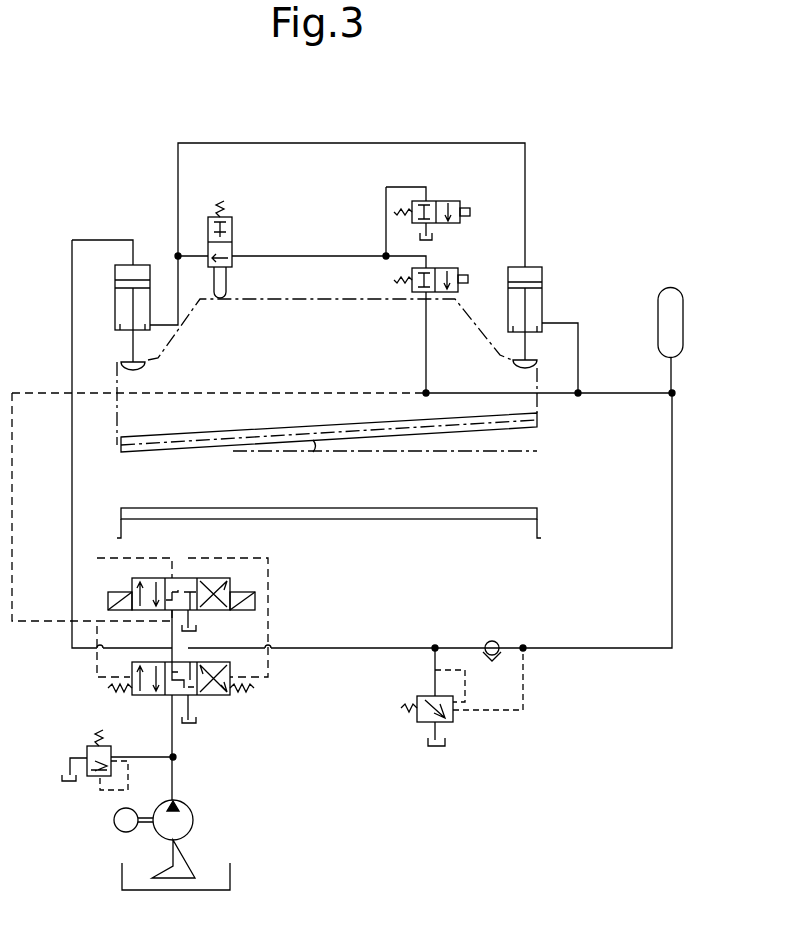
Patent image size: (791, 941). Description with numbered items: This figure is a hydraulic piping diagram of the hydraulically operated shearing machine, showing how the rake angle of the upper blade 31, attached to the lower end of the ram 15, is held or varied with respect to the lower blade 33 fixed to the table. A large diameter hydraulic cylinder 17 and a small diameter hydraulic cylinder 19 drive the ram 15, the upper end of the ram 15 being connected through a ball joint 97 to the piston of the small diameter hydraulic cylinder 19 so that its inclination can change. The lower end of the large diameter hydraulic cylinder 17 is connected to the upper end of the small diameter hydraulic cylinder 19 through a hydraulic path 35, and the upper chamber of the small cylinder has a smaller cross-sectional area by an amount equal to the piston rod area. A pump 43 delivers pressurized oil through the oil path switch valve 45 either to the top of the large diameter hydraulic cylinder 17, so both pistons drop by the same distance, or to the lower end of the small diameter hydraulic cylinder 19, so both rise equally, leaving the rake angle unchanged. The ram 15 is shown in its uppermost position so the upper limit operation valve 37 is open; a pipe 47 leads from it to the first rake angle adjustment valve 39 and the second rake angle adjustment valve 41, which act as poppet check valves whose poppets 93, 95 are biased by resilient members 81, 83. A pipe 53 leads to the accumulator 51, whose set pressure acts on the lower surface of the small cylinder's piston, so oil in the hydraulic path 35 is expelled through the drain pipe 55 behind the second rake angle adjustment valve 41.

The ram 15 is at (317, 368).
The large diameter hydraulic cylinder 17 is at (116, 320).
The small diameter hydraulic cylinder 19 is at (544, 313).
The upper blade 31 is at (540, 426).
The lower blade 33 is at (522, 508).
The hydraulic path 35 is at (398, 142).
The upper limit operation valve 37 is at (246, 232).
The first rake angle adjustment valve 39 is at (458, 270).
The second rake angle adjustment valve 41 is at (440, 201).
The pump 43 is at (190, 806).
The oil path switch valve 45 is at (205, 696).
The pipe 47 is at (275, 256).
The accumulator 51 is at (660, 307).
The pipe 53 is at (446, 393).
The drain pipe 55 is at (432, 238).
The resilient member 81 is at (394, 280).
The resilient member 83 is at (394, 208).
The poppet 93 is at (468, 282).
The poppet 95 is at (470, 212).
The ball joint 97 is at (125, 367).